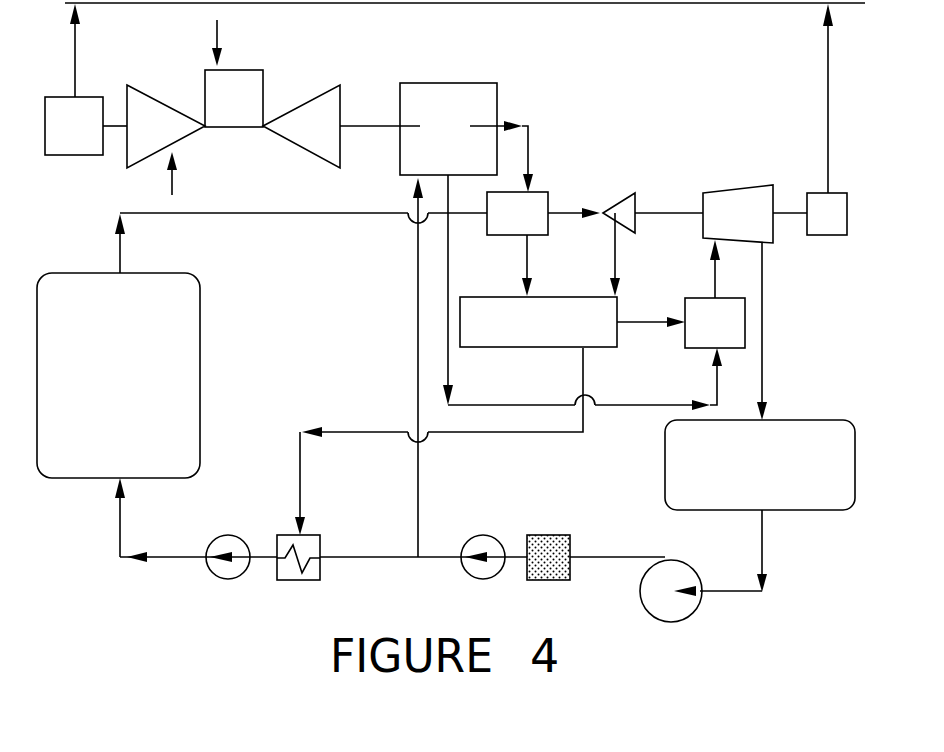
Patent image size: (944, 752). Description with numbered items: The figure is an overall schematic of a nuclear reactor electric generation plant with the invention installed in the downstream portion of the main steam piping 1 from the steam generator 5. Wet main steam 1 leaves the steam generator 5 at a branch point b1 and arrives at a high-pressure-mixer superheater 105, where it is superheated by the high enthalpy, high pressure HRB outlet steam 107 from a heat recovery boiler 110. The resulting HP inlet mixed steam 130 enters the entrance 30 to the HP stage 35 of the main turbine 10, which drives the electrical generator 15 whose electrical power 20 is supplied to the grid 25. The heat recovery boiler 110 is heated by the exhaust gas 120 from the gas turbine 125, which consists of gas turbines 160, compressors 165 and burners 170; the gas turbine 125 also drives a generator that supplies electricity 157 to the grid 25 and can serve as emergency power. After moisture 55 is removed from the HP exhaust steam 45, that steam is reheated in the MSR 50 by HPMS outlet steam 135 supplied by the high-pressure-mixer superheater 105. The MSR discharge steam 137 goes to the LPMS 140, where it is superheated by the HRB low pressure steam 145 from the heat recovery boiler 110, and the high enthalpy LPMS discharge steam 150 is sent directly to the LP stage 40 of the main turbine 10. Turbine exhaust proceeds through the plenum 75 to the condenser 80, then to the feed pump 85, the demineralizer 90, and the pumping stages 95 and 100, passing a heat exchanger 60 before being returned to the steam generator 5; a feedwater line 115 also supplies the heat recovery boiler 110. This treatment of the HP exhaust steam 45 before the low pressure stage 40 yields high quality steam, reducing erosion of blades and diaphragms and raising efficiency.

The wet main steam 1 is at (123, 252).
The steam generator 5 is at (129, 438).
The main turbine 10 is at (646, 150).
The electrical generator 15 is at (845, 266).
The electrical power generated 20 is at (830, 142).
The grid 25 is at (712, 4).
The entrance to the main turbine 30 is at (606, 210).
The high pressure (HP) stage 35 is at (638, 213).
The low pressure (LP) stage 40 is at (738, 186).
The HP exhaust steam 45 is at (616, 230).
The MSR 50 is at (593, 337).
The moisture 55 is at (370, 428).
The heat exchanger 60 is at (302, 582).
The plenum 75 is at (766, 378).
The condenser 80 is at (845, 457).
The feed pump 85 is at (687, 618).
The demineralizer 90 is at (538, 535).
The pumping stage 95 is at (487, 537).
The pumping stage 100 is at (229, 580).
The high-pressure-mixer superheater (HPMS) 105 is at (540, 226).
The HRB high pressure steam 107 is at (529, 147).
The heat recovery boiler (HRB) 110 is at (470, 167).
The feedwater line 115 is at (417, 373).
The exhaust gas 120 is at (358, 128).
The gas turbine 125 is at (250, 153).
The HP inlet mixed steam 130 is at (575, 216).
The HPMS outlet steam 135 is at (58, 173).
The MSR discharge steam 137 is at (630, 325).
The LPMS 140 is at (737, 332).
The HRB low pressure steam 145 is at (489, 404).
The LPMS discharge steam 150 is at (713, 268).
The electricity 157 is at (76, 73).
The gas turbines 160 is at (336, 138).
The compressors 165 is at (180, 138).
The burners 170 is at (257, 112).
The steam line branch point b1 is at (232, 214).